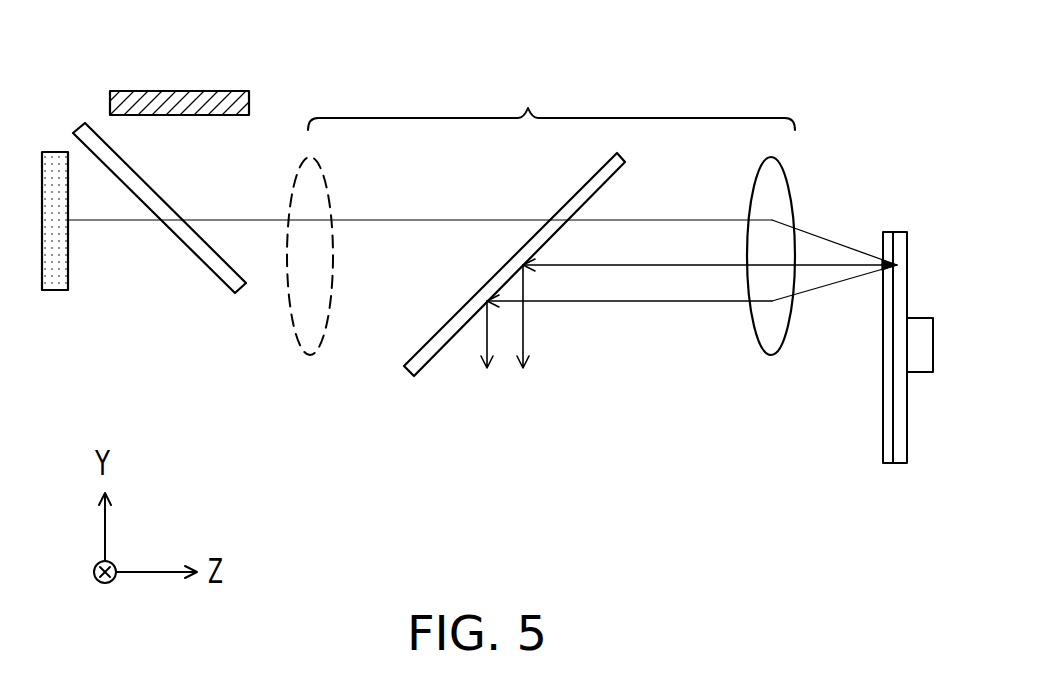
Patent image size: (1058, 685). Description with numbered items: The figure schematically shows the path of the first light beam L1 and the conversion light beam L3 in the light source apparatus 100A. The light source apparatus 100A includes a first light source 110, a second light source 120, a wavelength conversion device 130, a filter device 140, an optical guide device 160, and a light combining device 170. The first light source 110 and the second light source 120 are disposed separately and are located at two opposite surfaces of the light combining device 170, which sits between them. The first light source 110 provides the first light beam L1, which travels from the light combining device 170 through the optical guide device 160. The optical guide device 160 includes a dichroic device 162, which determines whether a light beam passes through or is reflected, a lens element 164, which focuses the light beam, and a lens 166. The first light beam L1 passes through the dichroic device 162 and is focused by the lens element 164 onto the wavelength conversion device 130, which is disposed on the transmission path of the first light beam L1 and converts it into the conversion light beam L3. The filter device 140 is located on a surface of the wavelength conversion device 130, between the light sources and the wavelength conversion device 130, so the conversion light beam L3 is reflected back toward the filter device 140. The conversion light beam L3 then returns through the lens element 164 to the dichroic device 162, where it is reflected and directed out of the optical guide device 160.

The light source apparatus 100A is at (910, 561).
The first light source 110 is at (55, 290).
The second light source 120 is at (182, 91).
The wavelength conversion device 130 is at (900, 232).
The filter device 140 is at (888, 232).
The optical guide device 160 is at (544, 259).
The dichroic device 162 is at (443, 347).
The lens element 164 is at (771, 355).
The lens 166 is at (325, 328).
The light combining device 170 is at (227, 278).
The first light beam L1 is at (367, 219).
The conversion light beam L3 is at (628, 302).